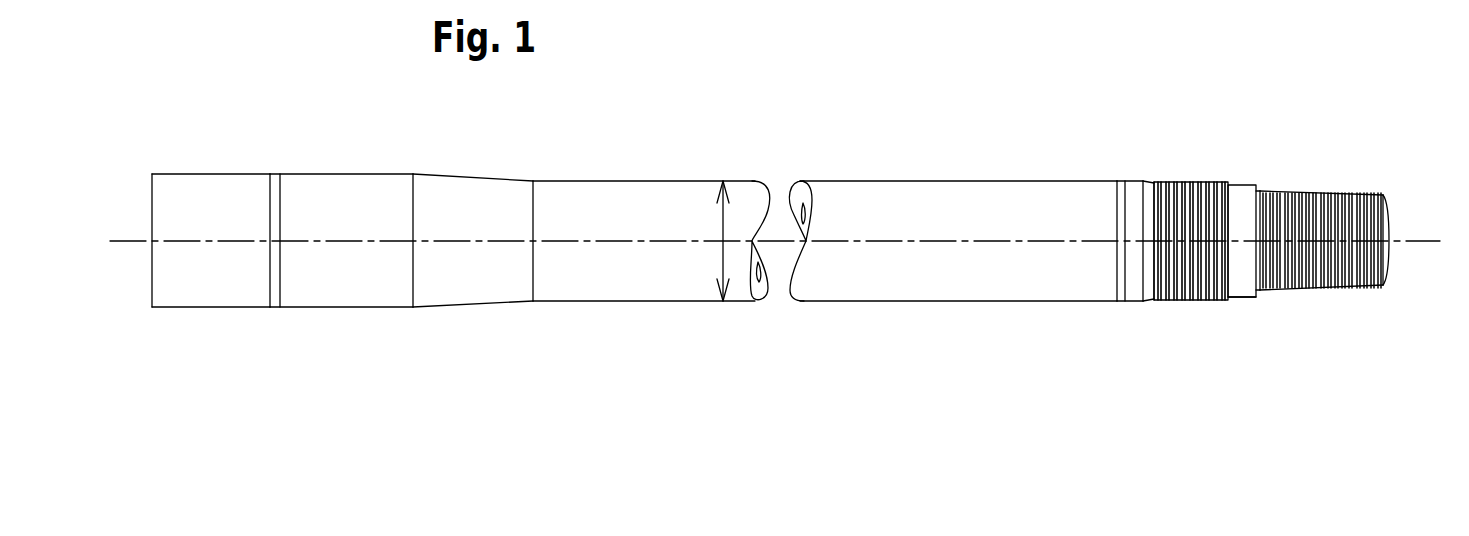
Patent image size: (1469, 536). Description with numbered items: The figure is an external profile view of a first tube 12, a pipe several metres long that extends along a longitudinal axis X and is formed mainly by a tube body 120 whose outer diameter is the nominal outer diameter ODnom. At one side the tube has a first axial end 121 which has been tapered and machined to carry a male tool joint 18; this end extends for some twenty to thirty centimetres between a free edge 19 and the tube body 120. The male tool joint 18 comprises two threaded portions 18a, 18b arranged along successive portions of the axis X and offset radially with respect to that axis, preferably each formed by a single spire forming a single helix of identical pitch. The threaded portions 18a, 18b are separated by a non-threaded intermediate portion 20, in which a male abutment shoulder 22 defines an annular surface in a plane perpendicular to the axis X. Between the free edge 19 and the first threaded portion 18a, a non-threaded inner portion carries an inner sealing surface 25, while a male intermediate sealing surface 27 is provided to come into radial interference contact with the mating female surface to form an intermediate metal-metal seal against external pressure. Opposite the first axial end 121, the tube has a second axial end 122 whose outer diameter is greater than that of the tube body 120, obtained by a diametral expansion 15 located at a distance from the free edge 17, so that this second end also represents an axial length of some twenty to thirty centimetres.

The first tube 12 is at (668, 161).
The diametral expansion 15 is at (474, 160).
The free edge 17 is at (152, 201).
The male tool joint 18 is at (1286, 241).
The first threaded portion 18a is at (1340, 191).
The second threaded portion 18b is at (1198, 182).
The free edge 19 is at (1390, 218).
The non-threaded intermediate portion 20 is at (1236, 175).
The male abutment shoulder 22 is at (1269, 189).
The inner sealing surface 25 is at (1388, 194).
The male intermediate sealing surface 27 is at (1242, 298).
The tube body 120 is at (894, 181).
The first axial end 121 is at (1405, 120).
The second axial end 122 is at (222, 155).
The longitudinal axis X is at (128, 243).
The nominal outer diameter ODnom is at (723, 253).